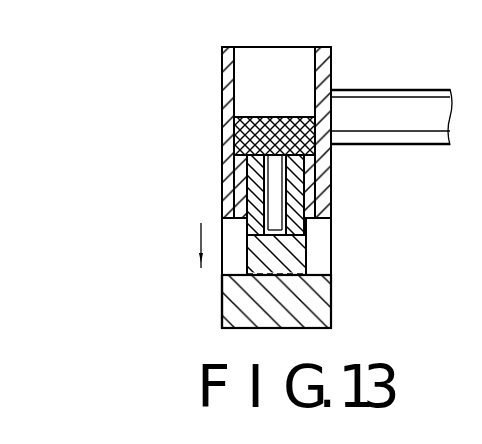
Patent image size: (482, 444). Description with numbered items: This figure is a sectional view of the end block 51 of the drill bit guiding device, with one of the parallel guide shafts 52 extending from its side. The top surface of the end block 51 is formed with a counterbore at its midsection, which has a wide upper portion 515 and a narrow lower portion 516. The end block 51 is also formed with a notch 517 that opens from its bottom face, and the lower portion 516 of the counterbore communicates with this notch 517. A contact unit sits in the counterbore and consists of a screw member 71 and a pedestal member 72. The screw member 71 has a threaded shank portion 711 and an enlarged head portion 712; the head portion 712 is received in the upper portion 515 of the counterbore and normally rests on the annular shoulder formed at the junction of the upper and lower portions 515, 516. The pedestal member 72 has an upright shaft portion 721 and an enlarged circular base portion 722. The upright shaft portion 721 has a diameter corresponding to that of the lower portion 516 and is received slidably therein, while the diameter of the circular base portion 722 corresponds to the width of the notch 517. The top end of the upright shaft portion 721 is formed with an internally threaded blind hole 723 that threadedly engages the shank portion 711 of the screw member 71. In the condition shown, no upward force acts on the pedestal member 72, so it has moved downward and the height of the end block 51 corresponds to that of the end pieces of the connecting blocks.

The end block 51 is at (222, 90).
The upper portion of the counterbore 515 is at (284, 62).
The screw member 71 is at (298, 111).
The head portion 712 is at (246, 134).
The shank portion 711 is at (247, 183).
The blind hole 723 is at (173, 195).
The lower portion of the counterbore 516 is at (303, 187).
The notch 517 is at (320, 232).
The upright shaft portion 721 is at (297, 257).
The circular base portion 722 is at (330, 313).
The pedestal member 72 is at (220, 306).
The guide shaft 52 is at (407, 103).